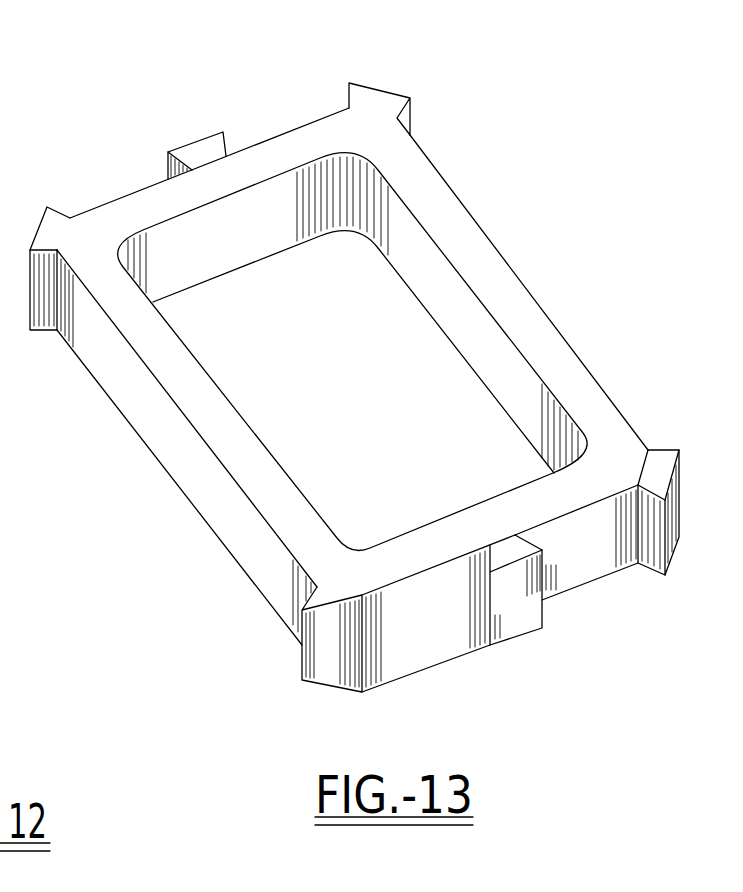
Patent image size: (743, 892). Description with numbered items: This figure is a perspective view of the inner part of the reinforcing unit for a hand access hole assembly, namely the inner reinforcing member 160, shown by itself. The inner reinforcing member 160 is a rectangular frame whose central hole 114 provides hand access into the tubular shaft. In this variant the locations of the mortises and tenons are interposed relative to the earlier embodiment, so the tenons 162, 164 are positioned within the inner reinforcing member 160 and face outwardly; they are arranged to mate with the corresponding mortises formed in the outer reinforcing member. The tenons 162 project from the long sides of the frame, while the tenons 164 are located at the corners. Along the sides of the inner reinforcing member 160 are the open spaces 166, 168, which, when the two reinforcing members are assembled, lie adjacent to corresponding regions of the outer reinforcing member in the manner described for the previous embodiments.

The inner reinforcing member 160 is at (352, 383).
The hole 114 is at (250, 392).
The tenon 162 is at (186, 145).
The tenon 164 is at (0, 232).
The open space 166 is at (103, 203).
The open space 168 is at (163, 457).